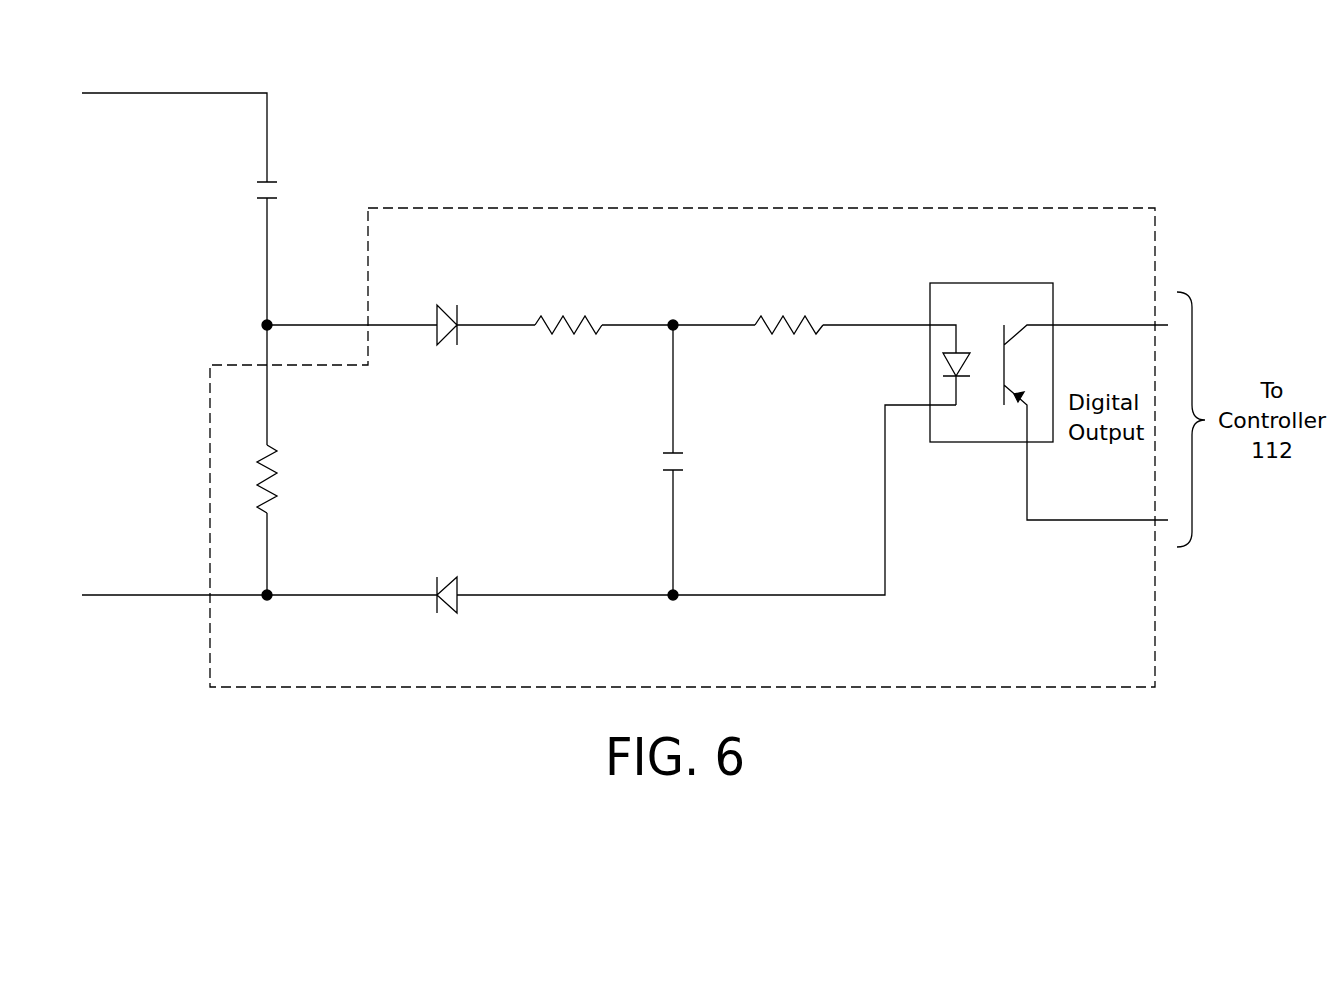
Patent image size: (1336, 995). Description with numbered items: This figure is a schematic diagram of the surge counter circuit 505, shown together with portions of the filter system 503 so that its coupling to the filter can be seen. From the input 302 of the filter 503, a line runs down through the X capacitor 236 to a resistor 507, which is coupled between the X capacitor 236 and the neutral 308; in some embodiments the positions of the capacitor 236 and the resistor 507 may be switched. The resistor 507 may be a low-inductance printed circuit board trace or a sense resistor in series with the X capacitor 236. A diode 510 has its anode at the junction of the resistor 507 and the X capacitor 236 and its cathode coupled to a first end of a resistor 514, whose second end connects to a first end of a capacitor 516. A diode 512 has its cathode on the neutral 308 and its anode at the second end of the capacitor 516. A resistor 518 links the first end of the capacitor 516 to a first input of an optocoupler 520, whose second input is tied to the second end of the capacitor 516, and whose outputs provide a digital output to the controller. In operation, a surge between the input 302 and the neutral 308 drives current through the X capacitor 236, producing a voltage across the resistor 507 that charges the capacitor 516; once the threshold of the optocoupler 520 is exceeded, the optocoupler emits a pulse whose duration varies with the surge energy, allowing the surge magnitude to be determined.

The input 302 is at (157, 93).
The X capacitor 236 is at (273, 182).
The filter system 503 is at (623, 145).
The surge counter circuit 505 is at (790, 207).
The resistor 507 is at (273, 462).
The neutral 308 is at (157, 597).
The diode 510 is at (457, 335).
The diode 512 is at (457, 605).
The resistor 514 is at (587, 330).
The capacitor 516 is at (683, 453).
The resistor 518 is at (808, 330).
The optocoupler 520 is at (1000, 442).